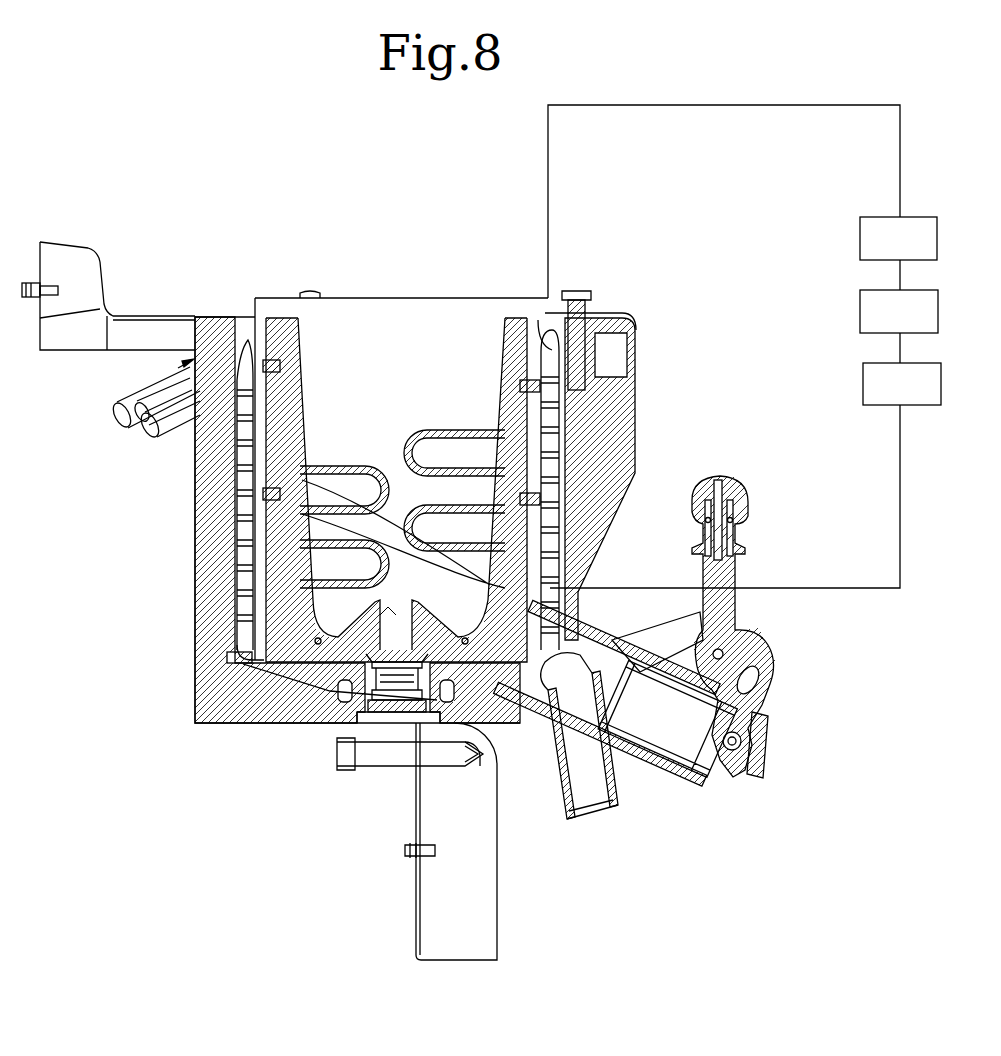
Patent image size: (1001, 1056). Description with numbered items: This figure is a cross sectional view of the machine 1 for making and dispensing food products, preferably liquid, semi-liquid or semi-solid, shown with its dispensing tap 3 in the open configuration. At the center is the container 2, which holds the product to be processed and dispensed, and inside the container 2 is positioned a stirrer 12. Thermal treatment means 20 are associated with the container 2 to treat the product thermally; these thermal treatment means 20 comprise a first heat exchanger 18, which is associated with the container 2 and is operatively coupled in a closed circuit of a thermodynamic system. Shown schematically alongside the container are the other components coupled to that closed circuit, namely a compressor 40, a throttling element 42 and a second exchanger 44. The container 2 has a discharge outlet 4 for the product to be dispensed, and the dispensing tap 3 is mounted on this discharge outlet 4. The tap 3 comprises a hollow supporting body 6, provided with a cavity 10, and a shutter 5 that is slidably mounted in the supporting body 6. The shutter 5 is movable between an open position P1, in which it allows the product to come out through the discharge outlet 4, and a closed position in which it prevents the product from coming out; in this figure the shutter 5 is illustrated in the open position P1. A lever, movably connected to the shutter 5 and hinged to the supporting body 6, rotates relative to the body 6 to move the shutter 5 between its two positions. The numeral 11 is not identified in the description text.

The machine 1 is at (178, 247).
The container 2 is at (420, 291).
The dispensing tap 3 is at (777, 626).
The discharge outlet 4 is at (530, 723).
The shutter 5 is at (639, 704).
The hollow supporting body 6 is at (660, 640).
The cavity 10 is at (553, 657).
The nozzle 11 is at (595, 821).
The stirrer 12 is at (312, 371).
The first heat exchanger 18 is at (245, 638).
The thermal treatment means 20 is at (245, 654).
The compressor 40 is at (885, 253).
The throttling element 42 is at (885, 326).
The second exchanger 44 is at (888, 398).
The open position P1 is at (767, 545).